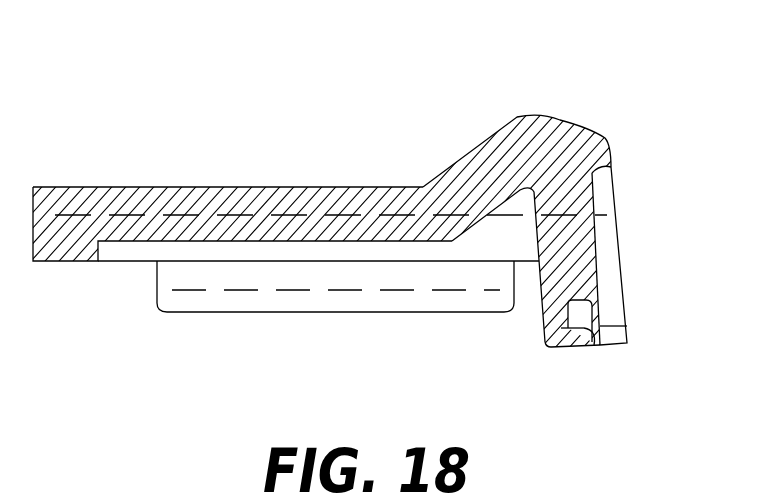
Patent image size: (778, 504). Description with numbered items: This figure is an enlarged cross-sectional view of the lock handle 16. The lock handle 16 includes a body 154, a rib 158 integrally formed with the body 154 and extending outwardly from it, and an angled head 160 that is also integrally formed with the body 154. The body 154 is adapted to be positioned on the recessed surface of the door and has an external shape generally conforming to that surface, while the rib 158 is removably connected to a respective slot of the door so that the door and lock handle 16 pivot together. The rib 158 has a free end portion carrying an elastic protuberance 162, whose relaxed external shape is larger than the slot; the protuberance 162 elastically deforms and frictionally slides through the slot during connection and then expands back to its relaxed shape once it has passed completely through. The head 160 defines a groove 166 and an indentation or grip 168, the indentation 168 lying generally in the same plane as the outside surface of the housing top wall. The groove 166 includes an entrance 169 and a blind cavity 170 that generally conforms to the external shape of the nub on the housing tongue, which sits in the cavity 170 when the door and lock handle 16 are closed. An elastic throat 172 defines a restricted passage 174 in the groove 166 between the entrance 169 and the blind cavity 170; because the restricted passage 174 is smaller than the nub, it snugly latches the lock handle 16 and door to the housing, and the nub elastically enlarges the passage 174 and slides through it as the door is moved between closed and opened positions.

The lock handle 16 is at (389, 225).
The body 154 is at (222, 190).
The rib 158 is at (210, 280).
The angled head 160 is at (565, 145).
The elastic protuberance 162 is at (355, 297).
The groove 166 is at (550, 350).
The indentation or grip 168 is at (597, 253).
The entrance 169 is at (580, 348).
The blind cavity 170 is at (562, 318).
The elastic throat 172 is at (627, 326).
The restricted passage 174 is at (587, 348).